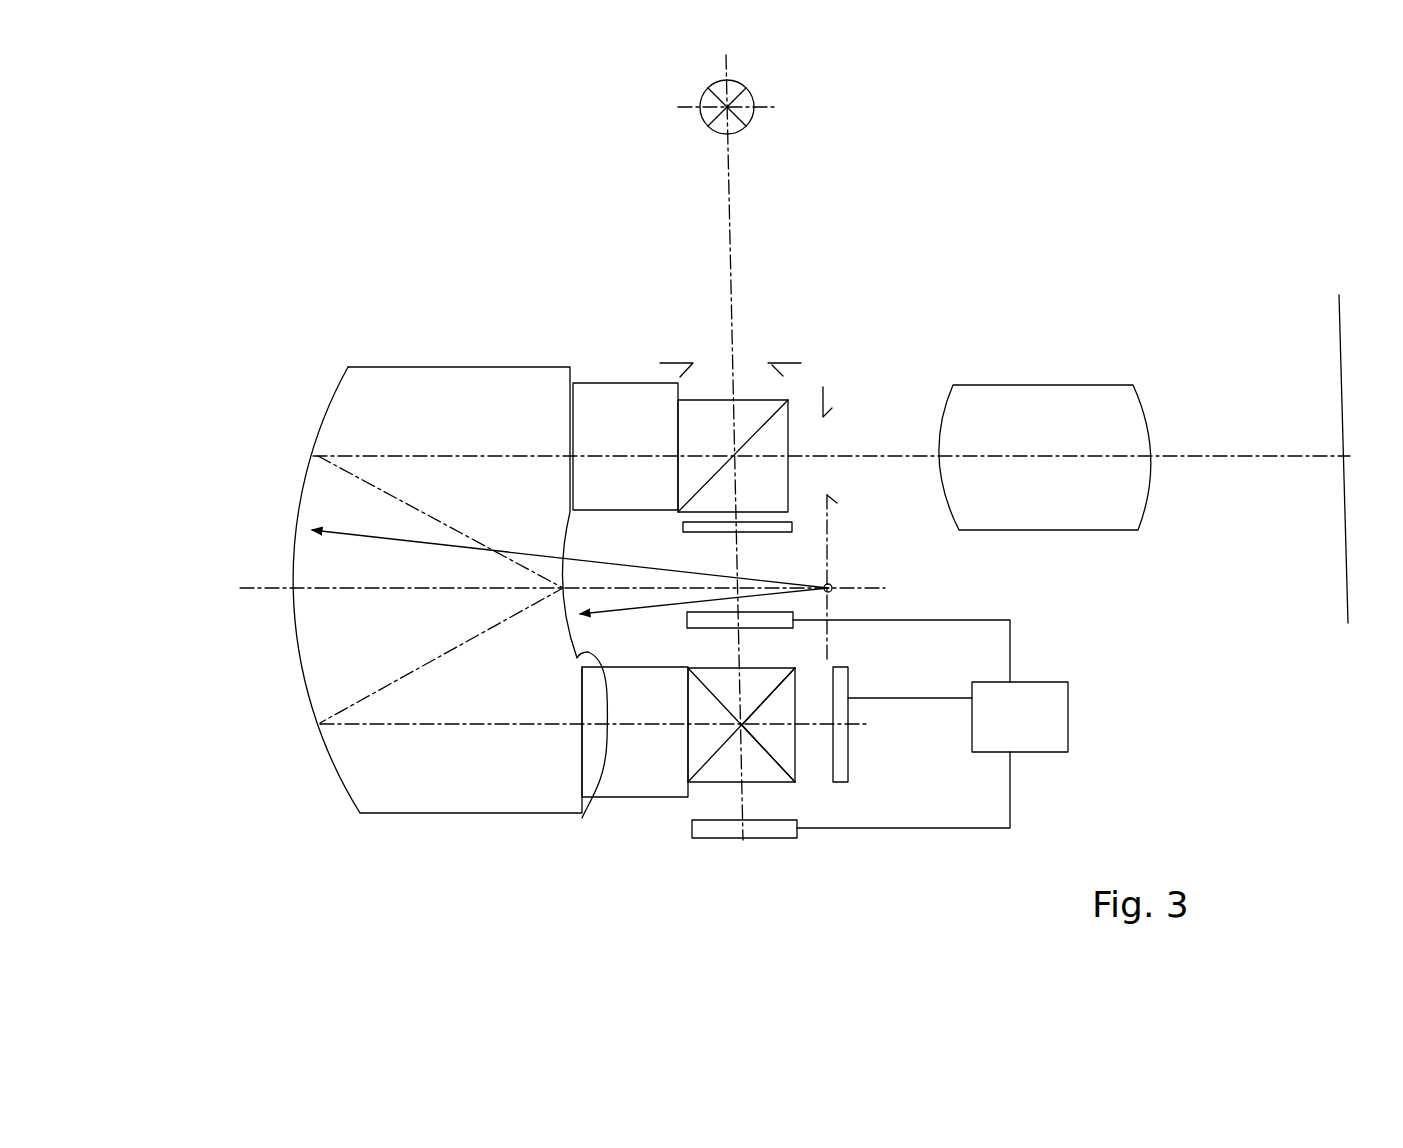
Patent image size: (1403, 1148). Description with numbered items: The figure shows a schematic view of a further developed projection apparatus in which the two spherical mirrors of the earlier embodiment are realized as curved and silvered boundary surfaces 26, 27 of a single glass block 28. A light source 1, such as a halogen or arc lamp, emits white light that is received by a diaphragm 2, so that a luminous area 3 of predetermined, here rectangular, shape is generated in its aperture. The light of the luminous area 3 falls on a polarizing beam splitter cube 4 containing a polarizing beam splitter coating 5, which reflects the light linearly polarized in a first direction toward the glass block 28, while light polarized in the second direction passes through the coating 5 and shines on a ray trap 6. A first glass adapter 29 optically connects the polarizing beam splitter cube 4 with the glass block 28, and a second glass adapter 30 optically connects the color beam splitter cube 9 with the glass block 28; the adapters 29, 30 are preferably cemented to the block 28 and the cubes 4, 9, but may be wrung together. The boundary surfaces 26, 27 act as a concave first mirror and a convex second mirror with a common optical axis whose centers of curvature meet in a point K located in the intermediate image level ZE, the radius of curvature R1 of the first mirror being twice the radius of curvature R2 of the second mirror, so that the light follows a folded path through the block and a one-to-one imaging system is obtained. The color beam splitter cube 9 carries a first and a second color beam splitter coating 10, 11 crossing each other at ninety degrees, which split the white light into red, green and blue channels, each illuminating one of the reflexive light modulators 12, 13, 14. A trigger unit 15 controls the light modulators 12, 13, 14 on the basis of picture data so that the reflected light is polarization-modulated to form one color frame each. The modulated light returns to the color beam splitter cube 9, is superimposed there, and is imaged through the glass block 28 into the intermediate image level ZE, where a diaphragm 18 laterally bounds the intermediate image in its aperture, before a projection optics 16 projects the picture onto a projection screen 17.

The light source 1 is at (752, 118).
The diaphragm 2 is at (783, 360).
The luminous area 3 is at (740, 362).
The polarizing beam splitter cube 4 is at (765, 428).
The polarizing beam splitter coating 5 is at (782, 391).
The intermediate image level ZE is at (836, 392).
The ray trap 6 is at (773, 535).
The color beam splitter cube 9 is at (712, 790).
The first color beam splitter coating 10 is at (777, 770).
The second color beam splitter coating 11 is at (775, 670).
The reflexive light modulator 12 is at (790, 840).
The reflexive light modulator 13 is at (848, 757).
The reflexive light modulator 14 is at (787, 611).
The trigger unit 15 is at (1068, 720).
The projection optics 16 is at (1067, 385).
The projection screen 17 is at (1339, 317).
The diaphragm 18 is at (830, 515).
The point K is at (835, 585).
The curved and silvered boundary surface 26 is at (302, 478).
The curved and silvered boundary surface 27 is at (582, 818).
The glass block 28 is at (415, 363).
The first glass adapter 29 is at (618, 383).
The second glass adapter 30 is at (615, 810).
The radius of curvature R1 is at (672, 568).
The radius of curvature R2 is at (656, 606).